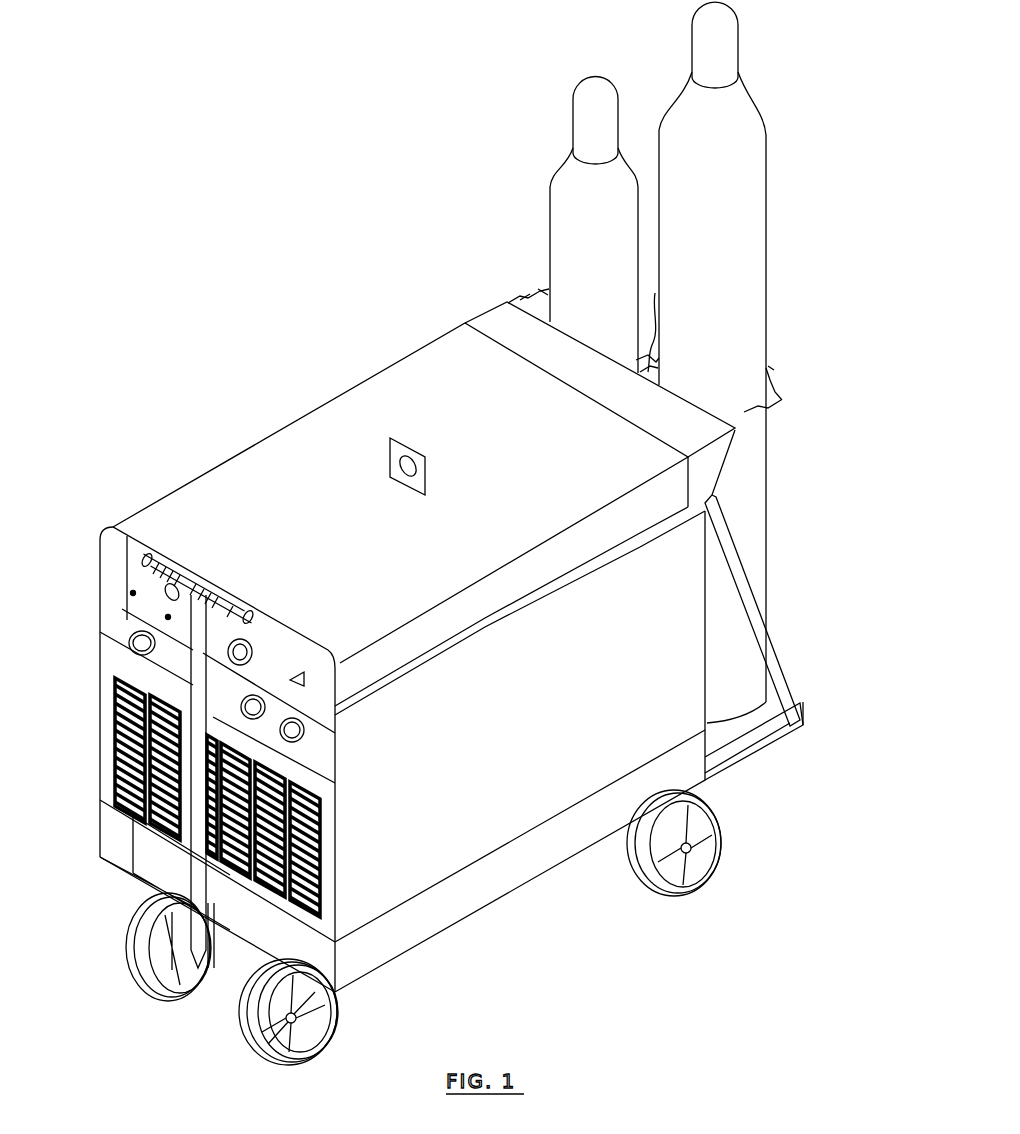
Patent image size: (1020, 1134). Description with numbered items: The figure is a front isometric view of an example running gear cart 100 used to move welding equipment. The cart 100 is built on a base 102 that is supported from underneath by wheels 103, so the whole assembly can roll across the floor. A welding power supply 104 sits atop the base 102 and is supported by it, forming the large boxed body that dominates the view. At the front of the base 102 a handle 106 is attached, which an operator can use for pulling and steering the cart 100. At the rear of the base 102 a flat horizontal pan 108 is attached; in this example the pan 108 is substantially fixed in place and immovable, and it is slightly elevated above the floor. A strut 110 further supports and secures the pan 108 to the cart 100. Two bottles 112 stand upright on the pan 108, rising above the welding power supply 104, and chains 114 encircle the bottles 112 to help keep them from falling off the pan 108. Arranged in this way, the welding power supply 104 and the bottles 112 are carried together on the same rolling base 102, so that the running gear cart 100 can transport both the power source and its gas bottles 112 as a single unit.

The running gear cart 100 is at (212, 243).
The base 102 is at (530, 863).
The wheels 103 is at (131, 939).
The welding power supply 104 is at (209, 504).
The handle 106 is at (190, 667).
The pan 108 is at (752, 744).
The strut 110 is at (782, 665).
The bottles 112 is at (570, 212).
The chains 114 is at (783, 400).